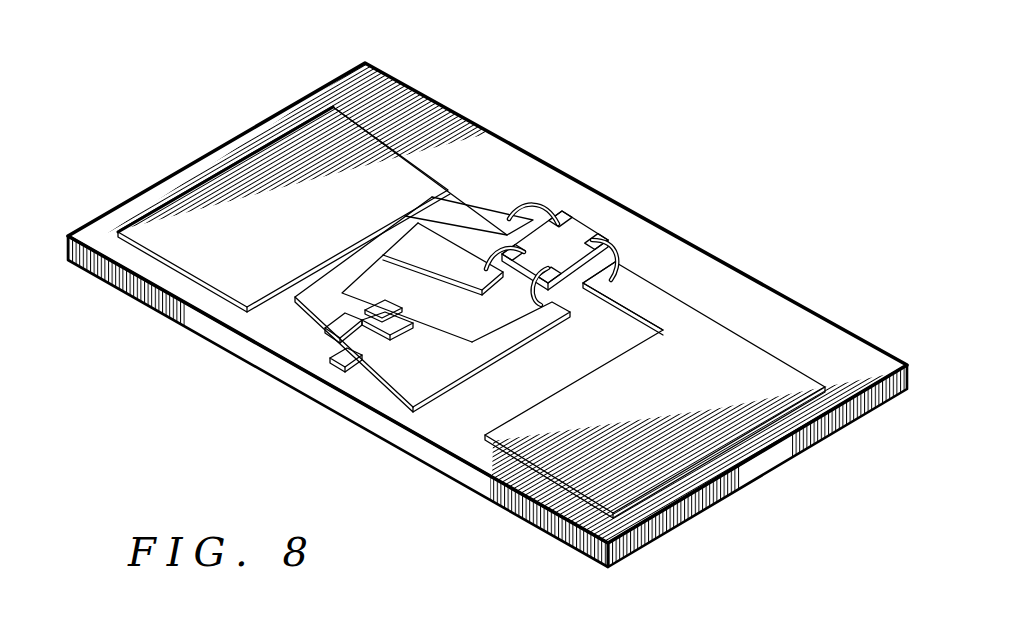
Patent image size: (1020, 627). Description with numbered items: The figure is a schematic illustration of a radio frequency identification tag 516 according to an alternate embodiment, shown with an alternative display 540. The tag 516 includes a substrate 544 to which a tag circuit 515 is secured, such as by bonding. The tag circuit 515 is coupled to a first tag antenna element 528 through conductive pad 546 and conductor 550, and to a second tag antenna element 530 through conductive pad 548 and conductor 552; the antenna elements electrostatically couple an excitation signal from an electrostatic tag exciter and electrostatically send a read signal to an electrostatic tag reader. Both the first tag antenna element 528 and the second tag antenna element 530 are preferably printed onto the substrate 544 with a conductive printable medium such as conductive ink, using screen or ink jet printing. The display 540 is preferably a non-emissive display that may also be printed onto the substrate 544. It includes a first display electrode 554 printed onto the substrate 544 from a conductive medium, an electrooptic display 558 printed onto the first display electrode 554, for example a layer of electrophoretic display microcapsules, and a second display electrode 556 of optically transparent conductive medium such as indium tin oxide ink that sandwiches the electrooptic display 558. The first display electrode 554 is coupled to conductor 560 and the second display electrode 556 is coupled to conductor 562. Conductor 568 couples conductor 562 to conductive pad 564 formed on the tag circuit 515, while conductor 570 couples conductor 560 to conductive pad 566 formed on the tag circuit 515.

The radio frequency identification tag 516 is at (222, 101).
The substrate 544 is at (354, 88).
The first tag antenna element 528 is at (204, 200).
The second tag antenna element 530 is at (712, 340).
The tag circuit 515 is at (573, 232).
The conductive pad 546 is at (556, 224).
The conductive pad 548 is at (581, 244).
The conductor 550 is at (522, 212).
The conductor 552 is at (607, 277).
The conductor 570 is at (542, 284).
The first display electrode 554 is at (388, 326).
The second display electrode 556 is at (362, 362).
The electrooptic display 558 is at (322, 331).
The display 540 is at (313, 356).
The conductor 560 is at (452, 365).
The conductor 562 is at (364, 266).
The conductive pad 564 is at (508, 240).
The conductive pad 566 is at (556, 266).
The conductor 568 is at (484, 265).